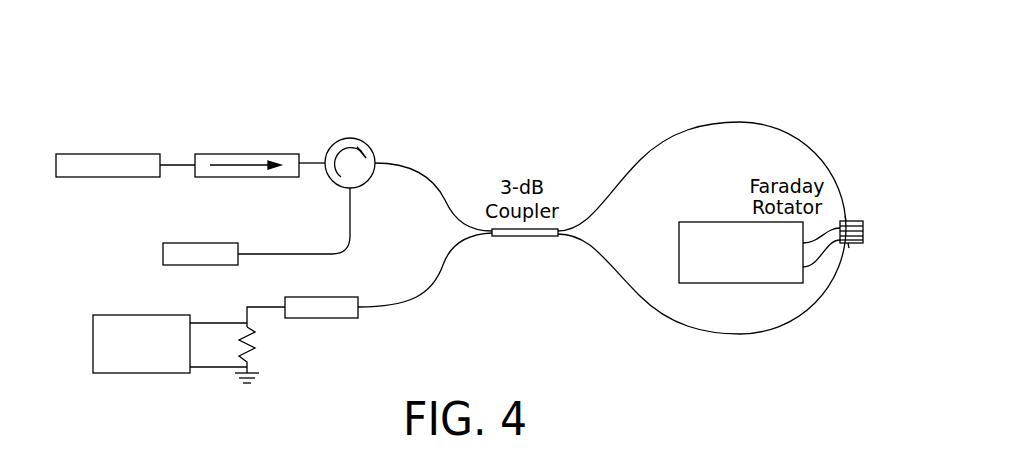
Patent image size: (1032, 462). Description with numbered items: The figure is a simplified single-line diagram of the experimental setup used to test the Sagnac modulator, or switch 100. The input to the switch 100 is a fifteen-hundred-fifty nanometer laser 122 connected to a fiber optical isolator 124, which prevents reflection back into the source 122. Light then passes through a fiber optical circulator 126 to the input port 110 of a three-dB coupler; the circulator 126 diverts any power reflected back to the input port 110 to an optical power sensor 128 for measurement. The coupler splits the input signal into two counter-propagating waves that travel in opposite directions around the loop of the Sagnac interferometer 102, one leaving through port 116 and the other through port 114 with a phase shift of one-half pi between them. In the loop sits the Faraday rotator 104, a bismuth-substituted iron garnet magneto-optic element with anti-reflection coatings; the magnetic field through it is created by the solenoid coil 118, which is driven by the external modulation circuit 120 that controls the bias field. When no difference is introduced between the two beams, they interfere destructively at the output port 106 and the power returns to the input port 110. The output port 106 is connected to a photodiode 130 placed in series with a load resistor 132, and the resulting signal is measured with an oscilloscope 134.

The switch 100 is at (488, 80).
The Sagnac interferometer 102 is at (673, 135).
The Faraday rotator 104 is at (853, 246).
The output port 106 is at (455, 247).
The input port 110 is at (445, 193).
The port 4 114 is at (600, 248).
The port 3 116 is at (600, 215).
The solenoid coil 118 is at (857, 220).
The modulation circuit 120 is at (695, 222).
The laser 122 is at (153, 152).
The fiber optical isolator 124 is at (203, 152).
The fiber optical circulator 126 is at (376, 153).
The optical power sensor 128 is at (163, 248).
The photodiode 130 is at (358, 310).
The load resistor 132 is at (258, 348).
The oscilloscope 134 is at (137, 375).